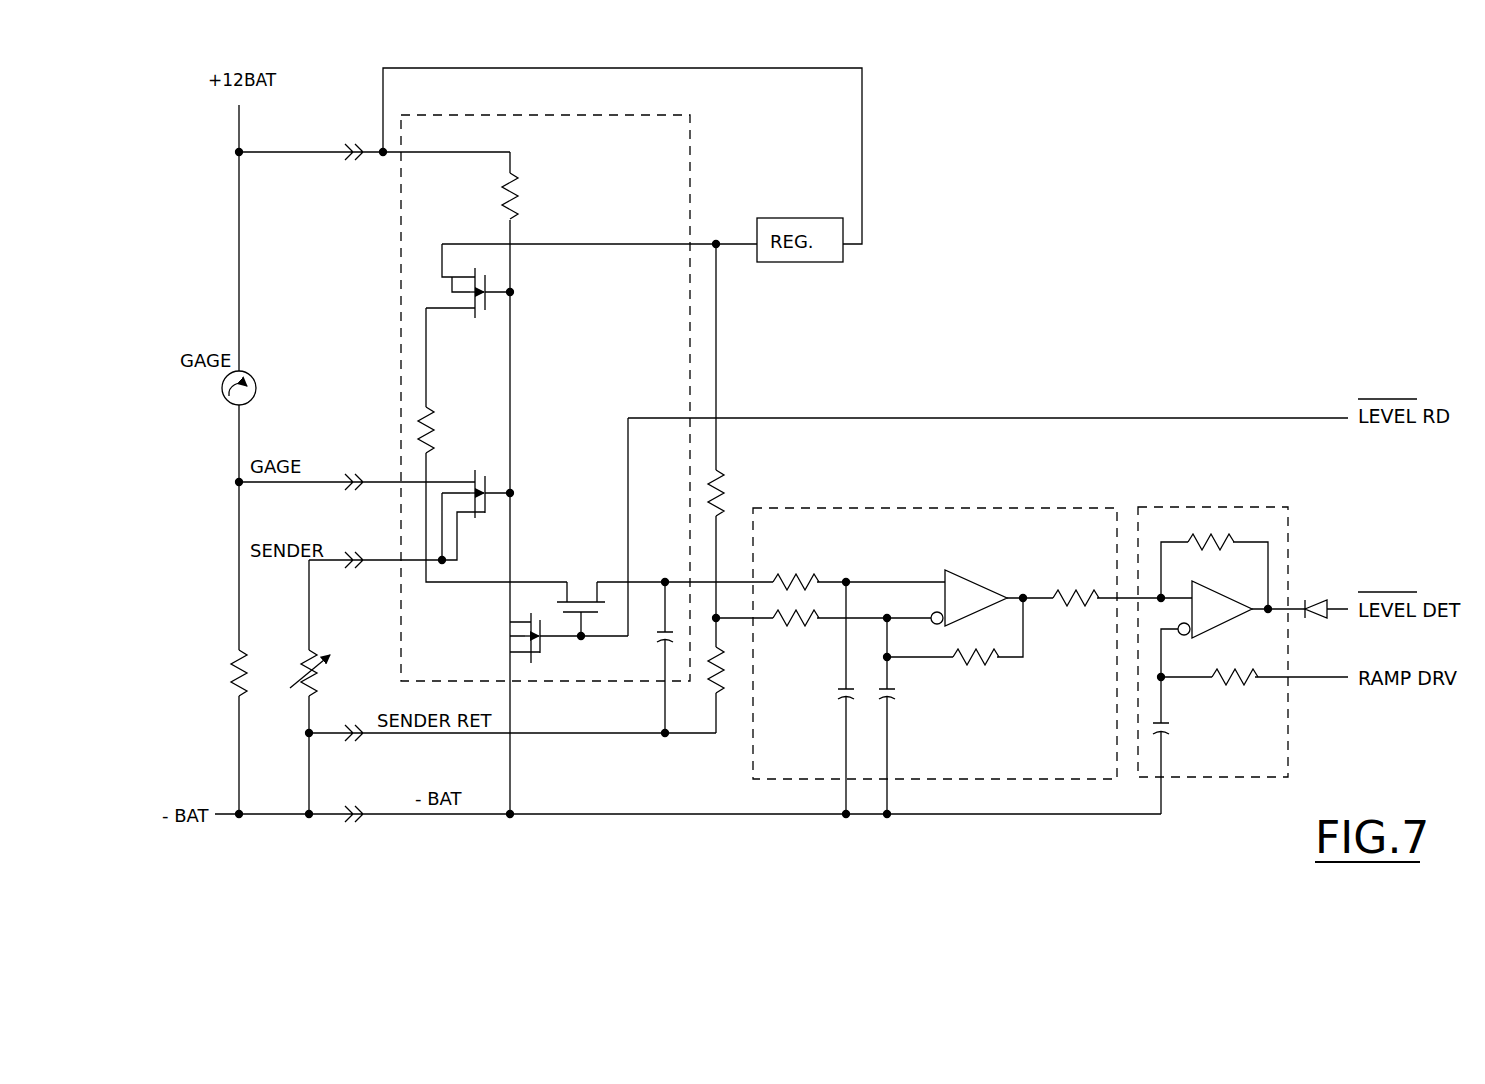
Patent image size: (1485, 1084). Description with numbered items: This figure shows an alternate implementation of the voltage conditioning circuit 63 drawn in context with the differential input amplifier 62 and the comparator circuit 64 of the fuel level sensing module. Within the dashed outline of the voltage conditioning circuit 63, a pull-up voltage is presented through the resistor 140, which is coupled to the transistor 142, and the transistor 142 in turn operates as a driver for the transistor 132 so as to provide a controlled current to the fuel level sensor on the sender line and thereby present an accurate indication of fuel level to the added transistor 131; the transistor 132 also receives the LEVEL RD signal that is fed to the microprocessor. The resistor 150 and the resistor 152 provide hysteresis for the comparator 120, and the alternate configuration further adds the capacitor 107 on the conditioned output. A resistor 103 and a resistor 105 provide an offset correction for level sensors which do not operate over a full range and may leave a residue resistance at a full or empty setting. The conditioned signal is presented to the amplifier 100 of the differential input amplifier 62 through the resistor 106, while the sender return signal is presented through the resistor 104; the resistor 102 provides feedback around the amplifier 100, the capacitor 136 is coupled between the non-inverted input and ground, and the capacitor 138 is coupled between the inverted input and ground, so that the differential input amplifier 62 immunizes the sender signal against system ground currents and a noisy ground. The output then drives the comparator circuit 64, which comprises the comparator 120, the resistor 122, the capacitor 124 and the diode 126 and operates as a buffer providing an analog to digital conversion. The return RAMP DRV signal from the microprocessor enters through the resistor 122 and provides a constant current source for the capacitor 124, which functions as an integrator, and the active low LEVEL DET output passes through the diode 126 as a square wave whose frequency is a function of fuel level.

The voltage conditioning circuit 63 is at (690, 145).
The resistor 140 is at (518, 196).
The transistor 142 is at (432, 284).
The resistor 150 is at (432, 425).
The transistor 132 is at (485, 480).
The transistor 131 is at (578, 585).
The capacitor 107 is at (658, 643).
The resistor 103 is at (720, 470).
The resistor 105 is at (723, 680).
The differential input amplifier 62 is at (947, 505).
The resistor 106 is at (790, 575).
The resistor 104 is at (797, 627).
The amplifier 100 is at (965, 578).
The resistor 102 is at (990, 662).
The capacitor 136 is at (841, 698).
The capacitor 138 is at (890, 699).
The resistor 152 is at (1207, 533).
The comparator circuit 64 is at (1272, 505).
The diode 126 is at (1318, 600).
The comparator 120 is at (1215, 625).
The resistor 122 is at (1232, 688).
The capacitor 124 is at (1165, 735).